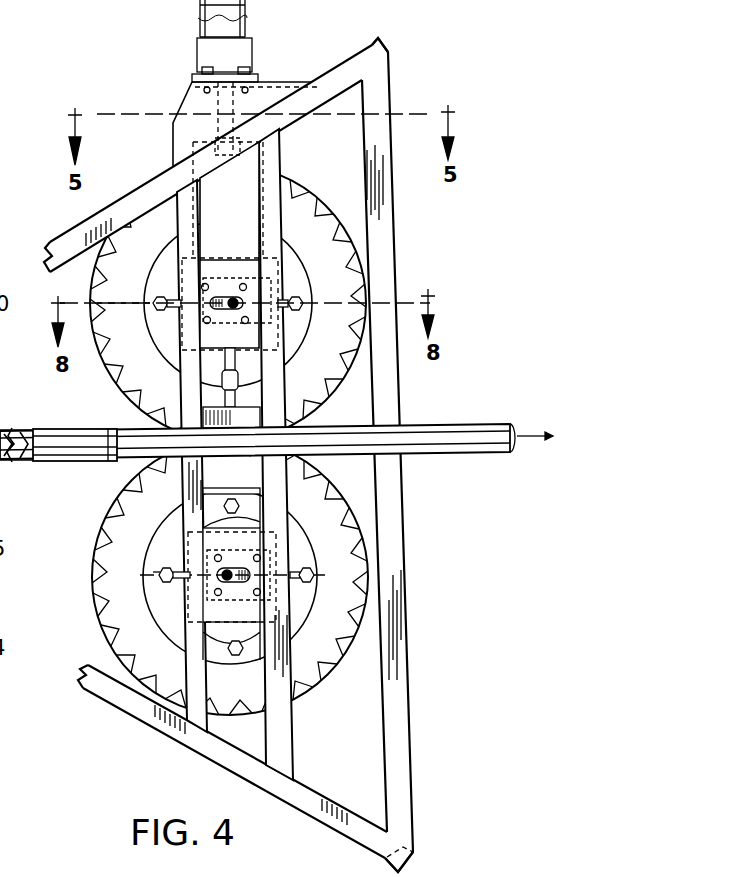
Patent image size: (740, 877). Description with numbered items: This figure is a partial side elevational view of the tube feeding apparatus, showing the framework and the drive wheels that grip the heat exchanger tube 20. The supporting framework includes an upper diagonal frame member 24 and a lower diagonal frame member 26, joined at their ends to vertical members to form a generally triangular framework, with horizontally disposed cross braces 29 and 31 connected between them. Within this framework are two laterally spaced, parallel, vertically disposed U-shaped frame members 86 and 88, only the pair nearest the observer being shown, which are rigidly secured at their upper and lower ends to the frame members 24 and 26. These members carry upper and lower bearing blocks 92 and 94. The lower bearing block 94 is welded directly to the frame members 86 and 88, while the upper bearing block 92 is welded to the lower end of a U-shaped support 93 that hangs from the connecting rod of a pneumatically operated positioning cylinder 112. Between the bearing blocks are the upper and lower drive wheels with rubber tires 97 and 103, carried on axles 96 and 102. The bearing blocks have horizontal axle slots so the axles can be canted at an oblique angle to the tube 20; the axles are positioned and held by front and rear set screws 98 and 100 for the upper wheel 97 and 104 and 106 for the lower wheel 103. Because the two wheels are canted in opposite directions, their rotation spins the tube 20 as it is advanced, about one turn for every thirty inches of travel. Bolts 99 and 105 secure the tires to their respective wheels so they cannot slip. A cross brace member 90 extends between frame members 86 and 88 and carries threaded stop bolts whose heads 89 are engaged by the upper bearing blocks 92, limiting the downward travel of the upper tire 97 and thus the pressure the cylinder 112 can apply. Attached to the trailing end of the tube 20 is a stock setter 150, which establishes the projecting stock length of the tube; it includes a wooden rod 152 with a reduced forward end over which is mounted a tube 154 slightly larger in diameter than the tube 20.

The tube 20 is at (462, 423).
The upper diagonal frame member 24 is at (165, 185).
The lower diagonal frame member 26 is at (138, 723).
The cross brace 29 is at (372, 60).
The cross brace 31 is at (418, 818).
The vertically disposed frame member 86 is at (192, 390).
The vertically disposed frame member 88 is at (318, 398).
The stop bolt head 89 is at (240, 355).
The cross brace member 90 is at (215, 440).
The upper bearing block 92 is at (250, 260).
The U-shaped support 93 is at (242, 219).
The lower bearing block 94 is at (228, 640).
The axle 96 is at (242, 297).
The upper wheel with rubber tire 97 is at (87, 288).
The front set screw 98 is at (170, 292).
The bolt 99 is at (143, 302).
The rear set screw 100 is at (302, 310).
The axle 102 is at (227, 573).
The lower wheel with rubber tire 103 is at (97, 548).
The front set screw 104 is at (168, 565).
The bolt 105 is at (158, 580).
The rear set screw 106 is at (295, 566).
The pneumatically operated positioning cylinder 112 is at (200, 57).
The stock setter 150 is at (47, 400).
The wooden rod 152 is at (20, 462).
The tube 154 is at (68, 442).